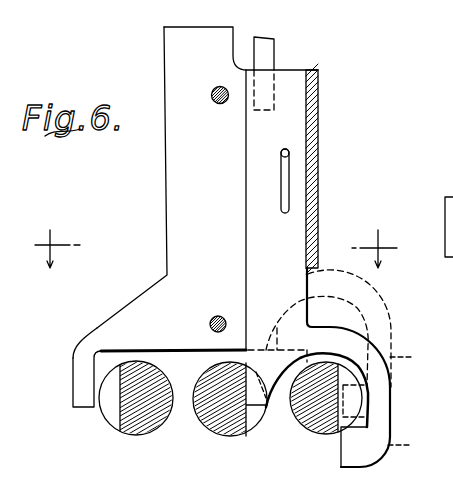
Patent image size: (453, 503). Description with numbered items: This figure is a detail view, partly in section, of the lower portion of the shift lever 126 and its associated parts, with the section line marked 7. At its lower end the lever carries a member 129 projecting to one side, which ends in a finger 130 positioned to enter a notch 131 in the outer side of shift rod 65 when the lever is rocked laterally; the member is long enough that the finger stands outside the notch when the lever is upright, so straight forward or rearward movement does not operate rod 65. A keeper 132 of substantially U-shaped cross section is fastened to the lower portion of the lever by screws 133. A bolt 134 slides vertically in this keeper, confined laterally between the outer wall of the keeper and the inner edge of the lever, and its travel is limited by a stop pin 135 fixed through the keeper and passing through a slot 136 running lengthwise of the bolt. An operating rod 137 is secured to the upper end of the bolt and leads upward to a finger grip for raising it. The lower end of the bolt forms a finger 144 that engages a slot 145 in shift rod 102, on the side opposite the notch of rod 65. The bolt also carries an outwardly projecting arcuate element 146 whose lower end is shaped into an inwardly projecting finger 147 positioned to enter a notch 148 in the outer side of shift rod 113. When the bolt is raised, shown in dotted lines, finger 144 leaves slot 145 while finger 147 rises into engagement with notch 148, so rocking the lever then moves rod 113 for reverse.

The shift lever 126 is at (167, 175).
The screws 133 is at (214, 101).
The operating rod 137 is at (270, 58).
The keeper 132 is at (318, 80).
The stop pin 135 is at (289, 152).
The slot 136 is at (289, 175).
The bolt 134 is at (285, 233).
The member 129 is at (97, 330).
The finger 130 is at (73, 370).
The shift rod 102 is at (212, 368).
The shift rod 65 is at (164, 380).
The notch 131 is at (113, 420).
The finger 144 is at (272, 408).
The slot 145 is at (323, 437).
The shift rod 113 is at (312, 480).
The arcuate element 146 is at (390, 357).
The notch 148 is at (348, 417).
The finger 147 is at (390, 455).
The section line 7- 7 is at (213, 247).